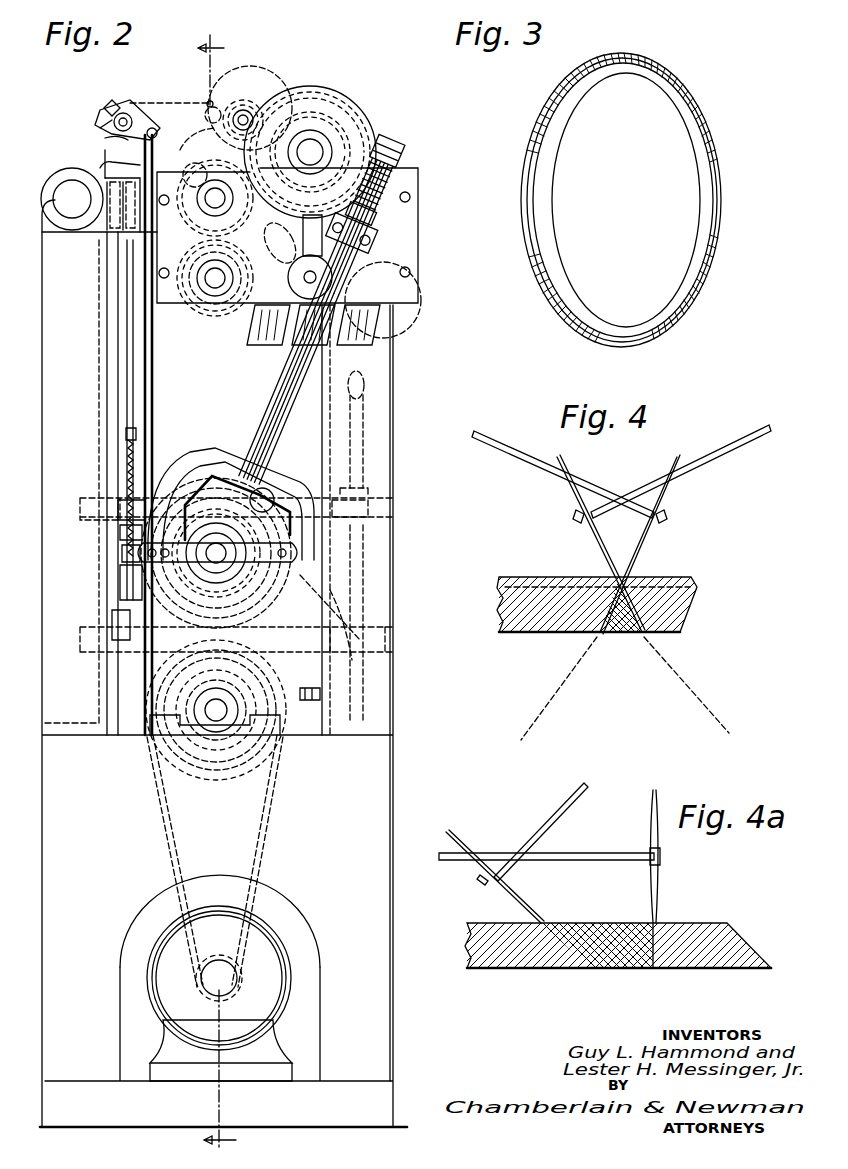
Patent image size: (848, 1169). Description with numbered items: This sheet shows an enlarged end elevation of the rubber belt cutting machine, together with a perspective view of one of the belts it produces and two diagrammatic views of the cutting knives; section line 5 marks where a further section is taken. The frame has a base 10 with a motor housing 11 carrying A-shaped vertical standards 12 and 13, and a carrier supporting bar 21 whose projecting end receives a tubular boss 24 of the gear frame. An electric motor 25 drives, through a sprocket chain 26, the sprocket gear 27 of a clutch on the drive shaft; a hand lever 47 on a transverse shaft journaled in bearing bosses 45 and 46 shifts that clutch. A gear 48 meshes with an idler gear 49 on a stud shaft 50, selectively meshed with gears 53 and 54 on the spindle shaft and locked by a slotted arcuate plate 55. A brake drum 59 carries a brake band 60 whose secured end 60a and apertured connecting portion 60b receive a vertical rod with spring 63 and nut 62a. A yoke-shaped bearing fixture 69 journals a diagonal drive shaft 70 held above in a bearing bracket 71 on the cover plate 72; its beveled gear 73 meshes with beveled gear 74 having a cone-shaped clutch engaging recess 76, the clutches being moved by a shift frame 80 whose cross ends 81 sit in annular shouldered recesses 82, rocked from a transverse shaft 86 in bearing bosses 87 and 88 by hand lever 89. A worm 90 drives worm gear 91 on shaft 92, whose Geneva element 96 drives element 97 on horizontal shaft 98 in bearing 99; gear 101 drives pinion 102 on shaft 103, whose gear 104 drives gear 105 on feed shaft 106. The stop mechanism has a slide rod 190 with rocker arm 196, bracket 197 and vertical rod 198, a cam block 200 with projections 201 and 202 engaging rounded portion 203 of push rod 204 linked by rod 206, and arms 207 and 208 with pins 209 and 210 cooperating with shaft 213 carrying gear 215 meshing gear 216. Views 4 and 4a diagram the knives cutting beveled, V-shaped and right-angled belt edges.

In FIG. 2, the section line 5- 5 is at (209, 593).
In FIG. 2, the base 10 is at (285, 1118).
In FIG. 2, the motor housing 11 is at (217, 679).
In FIG. 2, the vertical standard 12 is at (388, 486).
In FIG. 2, the vertical standard 13 is at (80, 483).
In FIG. 2, the carrier supporting bar 21 is at (62, 198).
In FIG. 2, the tubular boss 24 is at (66, 235).
In FIG. 2, the electric motor 25 is at (240, 981).
In FIG. 2, the sprocket chain 26 is at (266, 858).
In FIG. 2, the sprocket gear 27 is at (205, 780).
In FIG. 2, the bearing boss 45 is at (366, 622).
In FIG. 2, the bearing boss 46 is at (82, 660).
In FIG. 2, the hand lever 47 is at (366, 592).
In FIG. 2, the gear 48 is at (276, 768).
In FIG. 2, the idler gear 49 is at (322, 682).
In FIG. 2, the stud shaft 50 is at (318, 716).
In FIG. 2, the gear 53 is at (190, 475).
In FIG. 2, the gear 54 is at (218, 460).
In FIG. 2, the slotted arcuate plate 55 is at (368, 642).
In FIG. 2, the brake drum 59 is at (120, 555).
In FIG. 2, the brake band 60 is at (118, 510).
In FIG. 2, the secured end of brake band 60a is at (118, 530).
In FIG. 2, the apertured connecting portion 60b is at (118, 575).
In FIG. 2, the nut 62a is at (138, 430).
In FIG. 2, the spring 63 is at (138, 455).
In FIG. 2, the yoke-shaped bearing fixture 69 is at (205, 455).
In FIG. 2, the diagonal drive shaft 70 is at (262, 416).
In FIG. 2, the bearing bracket 71 is at (406, 150).
In FIG. 3, the bearing bracket 71 is at (621, 200).
In FIG. 2, the cover plate 72 is at (410, 240).
In FIG. 2, the beveled gear 73 is at (278, 486).
In FIG. 2, the beveled gear 74 is at (216, 585).
In FIG. 2, the cone-shaped clutch engaging recess 76 is at (196, 600).
In FIG. 2, the shift frame 80 is at (240, 572).
In FIG. 2, the cross end 81 is at (296, 553).
In FIG. 2, the annular shouldered recess 82 is at (216, 553).
In FIG. 2, the transverse shaft 86 is at (370, 506).
In FIG. 2, the bearing boss 87 is at (362, 486).
In FIG. 2, the bearing boss 88 is at (88, 496).
In FIG. 2, the hand lever 89 is at (368, 415).
In FIG. 2, the worm 90 is at (402, 181).
In FIG. 2, the worm gear 91 is at (335, 142).
In FIG. 2, the shaft 92 is at (345, 120).
In FIG. 2, the constantly rotating element of Geneva movement 96 is at (406, 198).
In FIG. 2, the Geneva movement element 97 is at (392, 325).
In FIG. 2, the horizontal shaft 98 is at (302, 282).
In FIG. 2, the bearing 99 is at (300, 266).
In FIG. 2, the gear 101 is at (285, 350).
In FIG. 2, the pinion 102 is at (196, 346).
In FIG. 2, the shaft 103 is at (228, 320).
In FIG. 2, the gear 104 is at (196, 314).
In FIG. 2, the gear 105 is at (182, 226).
In FIG. 2, the feed shaft 106 is at (272, 255).
In FIG. 2, the horizontal slide rod 190 is at (124, 112).
In FIG. 2, the rocker arm 196 is at (152, 126).
In FIG. 2, the bracket 197 is at (110, 104).
In FIG. 2, the vertical rod 198 is at (150, 386).
In FIG. 2, the cam block 200 is at (105, 128).
In FIG. 2, the cam projection 201 is at (105, 154).
In FIG. 2, the cam projection 202 is at (105, 138).
In FIG. 2, the upper rounded portion 203 is at (100, 170).
In FIG. 2, the vertical push rod 204 is at (112, 250).
In FIG. 2, the rod 206 is at (122, 330).
In FIG. 2, the radially extending arm 207 is at (209, 103).
In FIG. 2, the radially extending arm 208 is at (196, 158).
In FIG. 2, the inwardly projecting pin 209 is at (216, 106).
In FIG. 2, the inwardly projecting pin 210 is at (204, 176).
In FIG. 2, the shaft 213 is at (270, 98).
In FIG. 2, the gear 215 is at (250, 70).
In FIG. 2, the gear 216 is at (332, 94).
In FIG. 4, the needle arrangement 4 is at (602, 582).
In FIG. 4A, the needle arrangement 4a is at (617, 876).